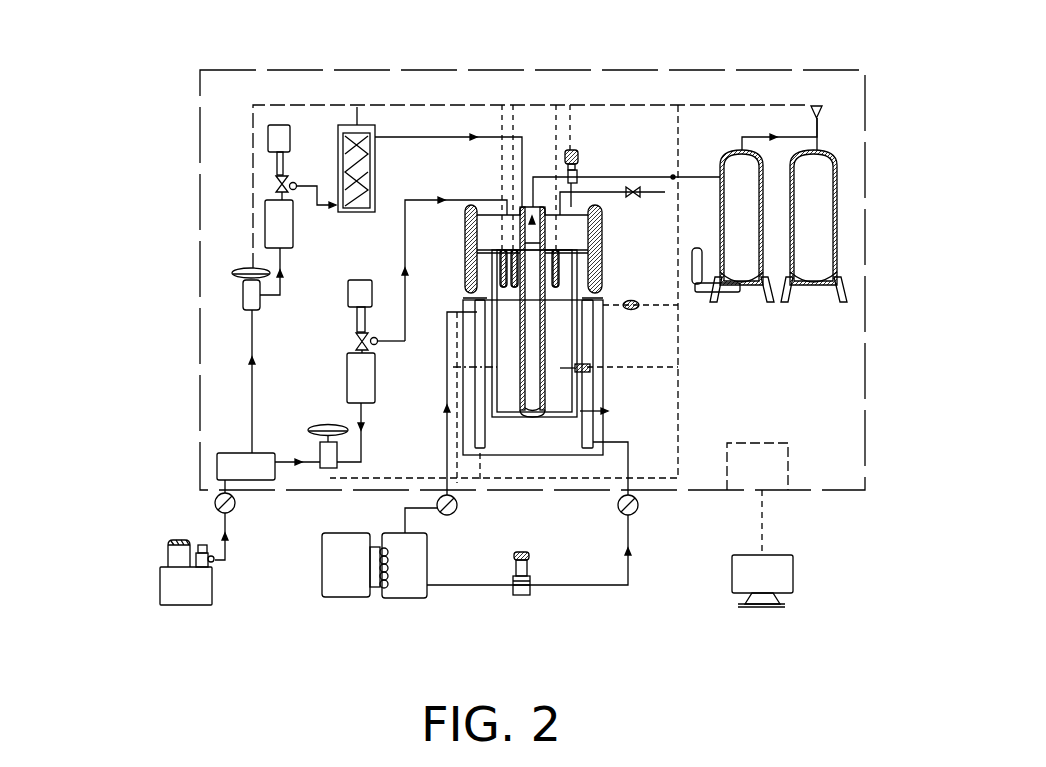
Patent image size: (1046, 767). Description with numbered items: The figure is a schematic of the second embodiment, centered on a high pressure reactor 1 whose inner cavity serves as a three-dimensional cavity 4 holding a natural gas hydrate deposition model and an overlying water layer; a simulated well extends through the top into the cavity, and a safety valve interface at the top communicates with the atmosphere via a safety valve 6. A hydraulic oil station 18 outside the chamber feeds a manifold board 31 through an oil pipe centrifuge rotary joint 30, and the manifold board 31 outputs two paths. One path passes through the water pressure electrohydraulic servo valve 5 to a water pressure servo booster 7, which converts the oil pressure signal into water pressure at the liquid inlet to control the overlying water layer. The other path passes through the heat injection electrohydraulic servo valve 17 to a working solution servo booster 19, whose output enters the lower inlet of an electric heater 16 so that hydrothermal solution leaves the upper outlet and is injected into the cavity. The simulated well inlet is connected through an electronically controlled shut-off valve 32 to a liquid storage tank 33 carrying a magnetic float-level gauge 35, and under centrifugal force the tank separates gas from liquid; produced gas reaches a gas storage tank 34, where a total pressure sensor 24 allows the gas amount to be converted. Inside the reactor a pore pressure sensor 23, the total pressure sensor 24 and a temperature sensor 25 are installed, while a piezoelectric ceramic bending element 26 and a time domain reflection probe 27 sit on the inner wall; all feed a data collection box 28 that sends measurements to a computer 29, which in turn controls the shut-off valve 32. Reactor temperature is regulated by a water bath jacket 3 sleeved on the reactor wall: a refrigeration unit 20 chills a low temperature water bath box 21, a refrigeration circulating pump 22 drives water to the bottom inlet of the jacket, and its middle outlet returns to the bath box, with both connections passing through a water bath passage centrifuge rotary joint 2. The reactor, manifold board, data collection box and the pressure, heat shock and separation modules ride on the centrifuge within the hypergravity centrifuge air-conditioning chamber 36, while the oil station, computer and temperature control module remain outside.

The high pressure reactor 1 is at (575, 230).
The water bath passage centrifuge rotary joint 2 is at (450, 515).
The water bath jacket 3 is at (482, 423).
The three-dimensional cavity 4 is at (521, 351).
The water pressure electrohydraulic servo valve 5 is at (327, 468).
The safety valve 6 is at (634, 190).
The water pressure servo booster 7 is at (347, 365).
The electric heater 16 is at (338, 127).
The heat injection electrohydraulic servo valve 17 is at (243, 275).
The hydraulic oil station 18 is at (187, 597).
The working solution servo booster 19 is at (280, 125).
The refrigeration unit 20 is at (353, 597).
The low temperature water bath box 21 is at (405, 598).
The refrigeration circulating pump 22 is at (530, 592).
The pore pressure sensor 23 is at (510, 280).
The total pressure sensor 24 is at (516, 280).
The temperature sensor 25 is at (556, 280).
The piezoelectric ceramic bending element 26 is at (635, 311).
The time domain reflection probe 27 is at (588, 370).
The data collection box 28 is at (757, 485).
The computer 29 is at (763, 607).
The oil pipe centrifuge rotary joint 30 is at (216, 508).
The manifold board 31 is at (217, 470).
The electronically controlled shut-off valve 32 is at (571, 148).
The liquid storage tank 33 is at (750, 150).
The gas storage tank 34 is at (834, 213).
The magnetic float-level gauge 35 is at (723, 293).
The hypergravity centrifuge air-conditioning chamber 36 is at (866, 330).